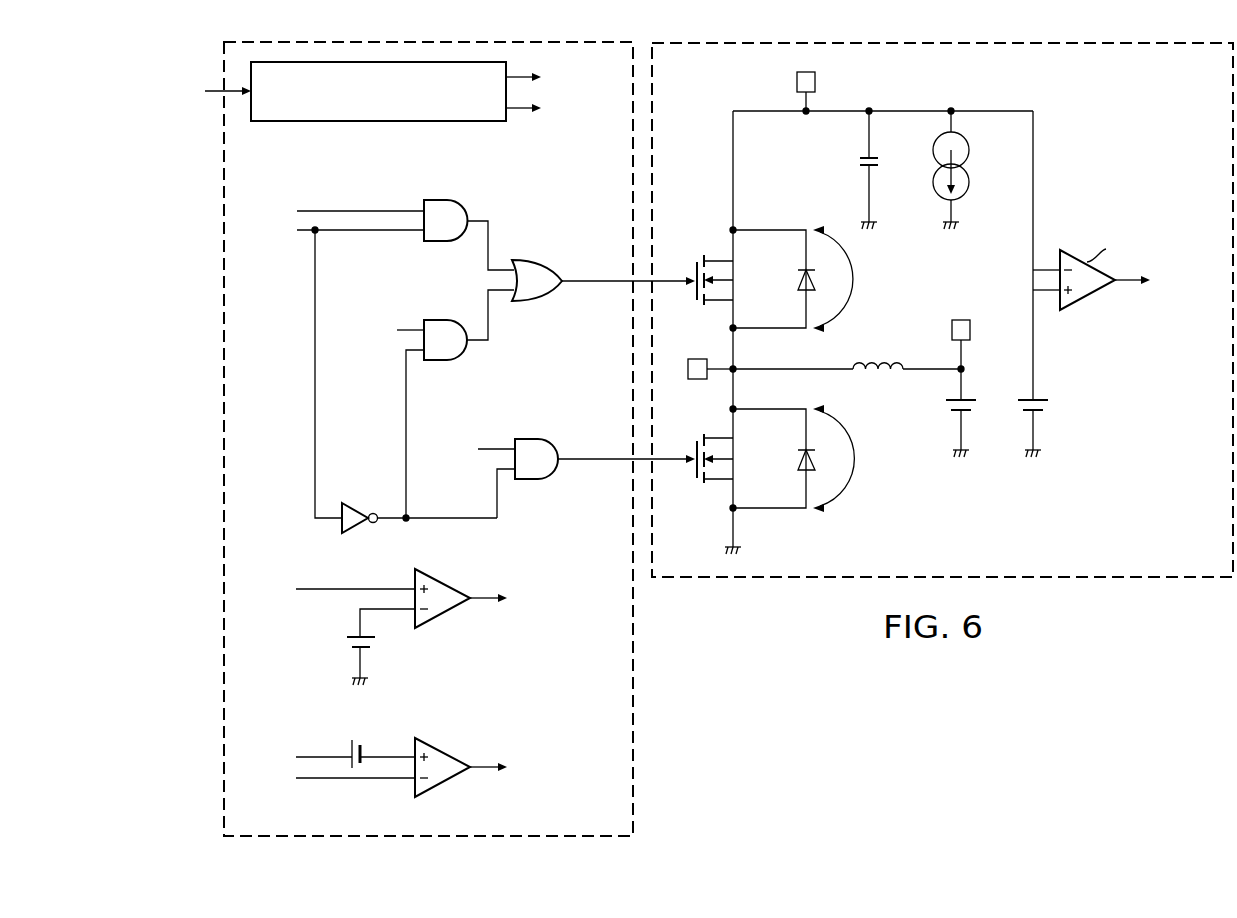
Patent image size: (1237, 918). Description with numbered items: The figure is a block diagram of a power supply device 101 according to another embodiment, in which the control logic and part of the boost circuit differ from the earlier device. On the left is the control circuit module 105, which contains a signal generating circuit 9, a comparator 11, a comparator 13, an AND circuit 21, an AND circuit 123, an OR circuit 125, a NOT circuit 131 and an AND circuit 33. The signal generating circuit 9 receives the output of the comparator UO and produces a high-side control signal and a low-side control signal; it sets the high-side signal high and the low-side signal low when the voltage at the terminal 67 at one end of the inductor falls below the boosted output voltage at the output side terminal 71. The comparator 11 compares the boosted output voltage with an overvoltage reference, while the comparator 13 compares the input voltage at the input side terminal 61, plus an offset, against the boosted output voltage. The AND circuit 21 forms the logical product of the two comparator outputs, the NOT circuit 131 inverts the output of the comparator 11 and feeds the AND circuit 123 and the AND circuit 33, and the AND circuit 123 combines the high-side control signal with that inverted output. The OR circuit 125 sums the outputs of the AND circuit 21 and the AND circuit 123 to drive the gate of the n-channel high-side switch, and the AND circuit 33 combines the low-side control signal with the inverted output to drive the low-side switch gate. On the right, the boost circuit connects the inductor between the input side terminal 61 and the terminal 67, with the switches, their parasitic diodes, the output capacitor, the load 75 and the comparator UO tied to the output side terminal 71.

The signal generating circuit 9 is at (378, 122).
The AND circuit 21 is at (440, 200).
The OR circuit 125 is at (521, 259).
The AND circuit 123 is at (442, 320).
The AND circuit 33 is at (532, 481).
The NOT circuit 131 is at (360, 531).
The comparator 11 is at (440, 617).
The comparator 13 is at (440, 785).
The control circuit module 105 is at (216, 379).
The output side terminal 71 is at (818, 83).
The load 75 is at (969, 151).
The terminal 67 is at (696, 357).
The input side terminal 61 is at (963, 318).
The power supply device 101 is at (1140, 645).